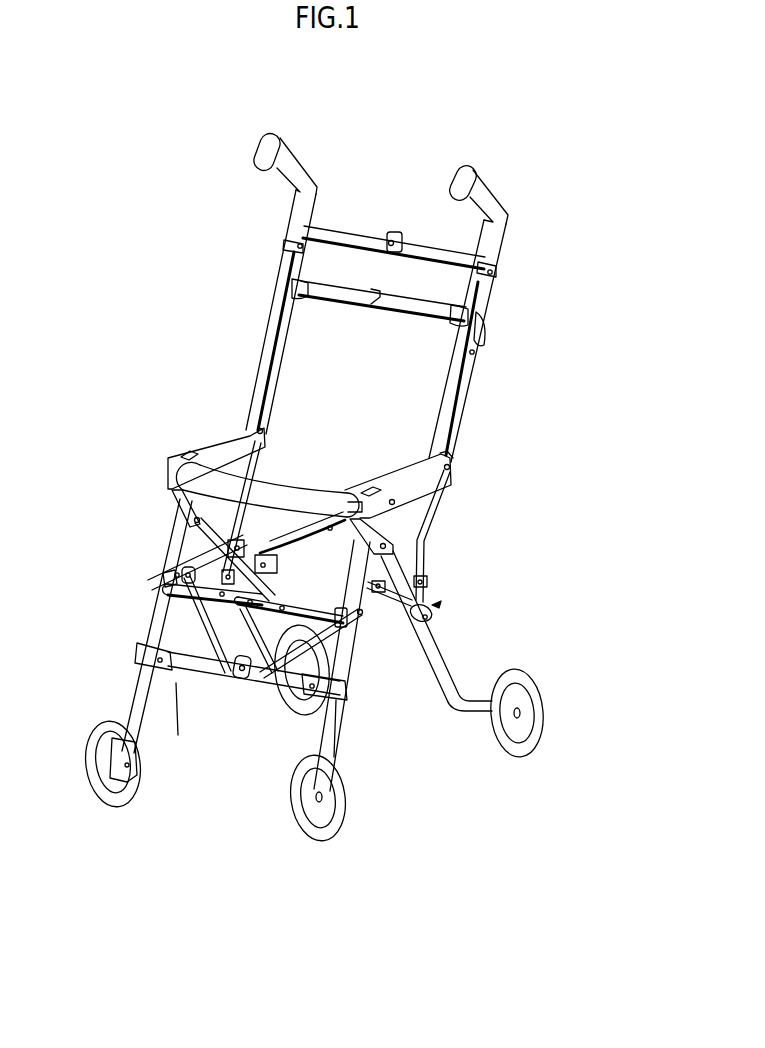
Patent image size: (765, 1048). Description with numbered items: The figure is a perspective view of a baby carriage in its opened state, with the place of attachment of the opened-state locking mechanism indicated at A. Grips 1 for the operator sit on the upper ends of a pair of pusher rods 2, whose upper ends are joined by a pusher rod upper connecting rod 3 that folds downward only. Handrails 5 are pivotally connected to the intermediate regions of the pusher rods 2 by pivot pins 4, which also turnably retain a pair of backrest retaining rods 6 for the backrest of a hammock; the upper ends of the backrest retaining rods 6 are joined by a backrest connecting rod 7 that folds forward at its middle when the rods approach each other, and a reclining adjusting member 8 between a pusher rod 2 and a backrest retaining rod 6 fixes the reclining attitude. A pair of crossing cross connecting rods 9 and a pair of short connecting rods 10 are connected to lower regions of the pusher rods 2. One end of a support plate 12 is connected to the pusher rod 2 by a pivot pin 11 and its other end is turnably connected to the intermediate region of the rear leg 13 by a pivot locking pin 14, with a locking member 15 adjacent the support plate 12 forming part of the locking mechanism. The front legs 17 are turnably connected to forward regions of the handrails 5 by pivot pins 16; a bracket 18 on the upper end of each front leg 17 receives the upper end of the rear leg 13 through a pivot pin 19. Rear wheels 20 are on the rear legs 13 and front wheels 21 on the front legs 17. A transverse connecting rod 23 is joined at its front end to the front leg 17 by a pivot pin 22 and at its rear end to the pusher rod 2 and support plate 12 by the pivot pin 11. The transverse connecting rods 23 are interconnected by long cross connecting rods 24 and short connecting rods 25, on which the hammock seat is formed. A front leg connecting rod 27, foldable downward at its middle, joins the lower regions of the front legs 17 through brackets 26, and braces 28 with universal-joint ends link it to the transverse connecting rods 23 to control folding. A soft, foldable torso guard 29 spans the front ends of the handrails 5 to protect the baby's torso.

The grips 1 is at (293, 153).
The pusher rods 2 is at (263, 347).
The pusher rod upper connecting rod 3 is at (347, 230).
The pivot pins 4 is at (267, 427).
The handrails 5 is at (213, 445).
The backrest retaining rods 6 is at (278, 358).
The backrest connecting rod 7 is at (387, 307).
The reclining adjusting member 8 is at (483, 327).
The cross connecting rods 9 is at (300, 522).
The short connecting rods 10 is at (278, 565).
The pivot pin 11 is at (424, 590).
The support plate 12 is at (423, 597).
The rear leg 13 is at (443, 662).
The pivot locking pin 14 is at (210, 557).
The locking member 15 is at (432, 615).
The pivot pins 16 is at (396, 502).
The front legs 17 is at (130, 695).
The bracket 18 is at (178, 505).
The pivot pin 19 is at (194, 518).
The rear wheels 20 is at (293, 707).
The front wheels 21 is at (110, 804).
The pivot pin 22 is at (192, 575).
The transverse connecting rod 23 is at (165, 579).
The long cross connecting rods 24 is at (205, 598).
The short connecting rods 25 is at (172, 590).
The brackets 26 is at (135, 658).
The front leg connecting rod 27 is at (205, 665).
The braces 28 is at (205, 630).
The torso guard 29 is at (185, 456).
The place of attachment A is at (440, 603).